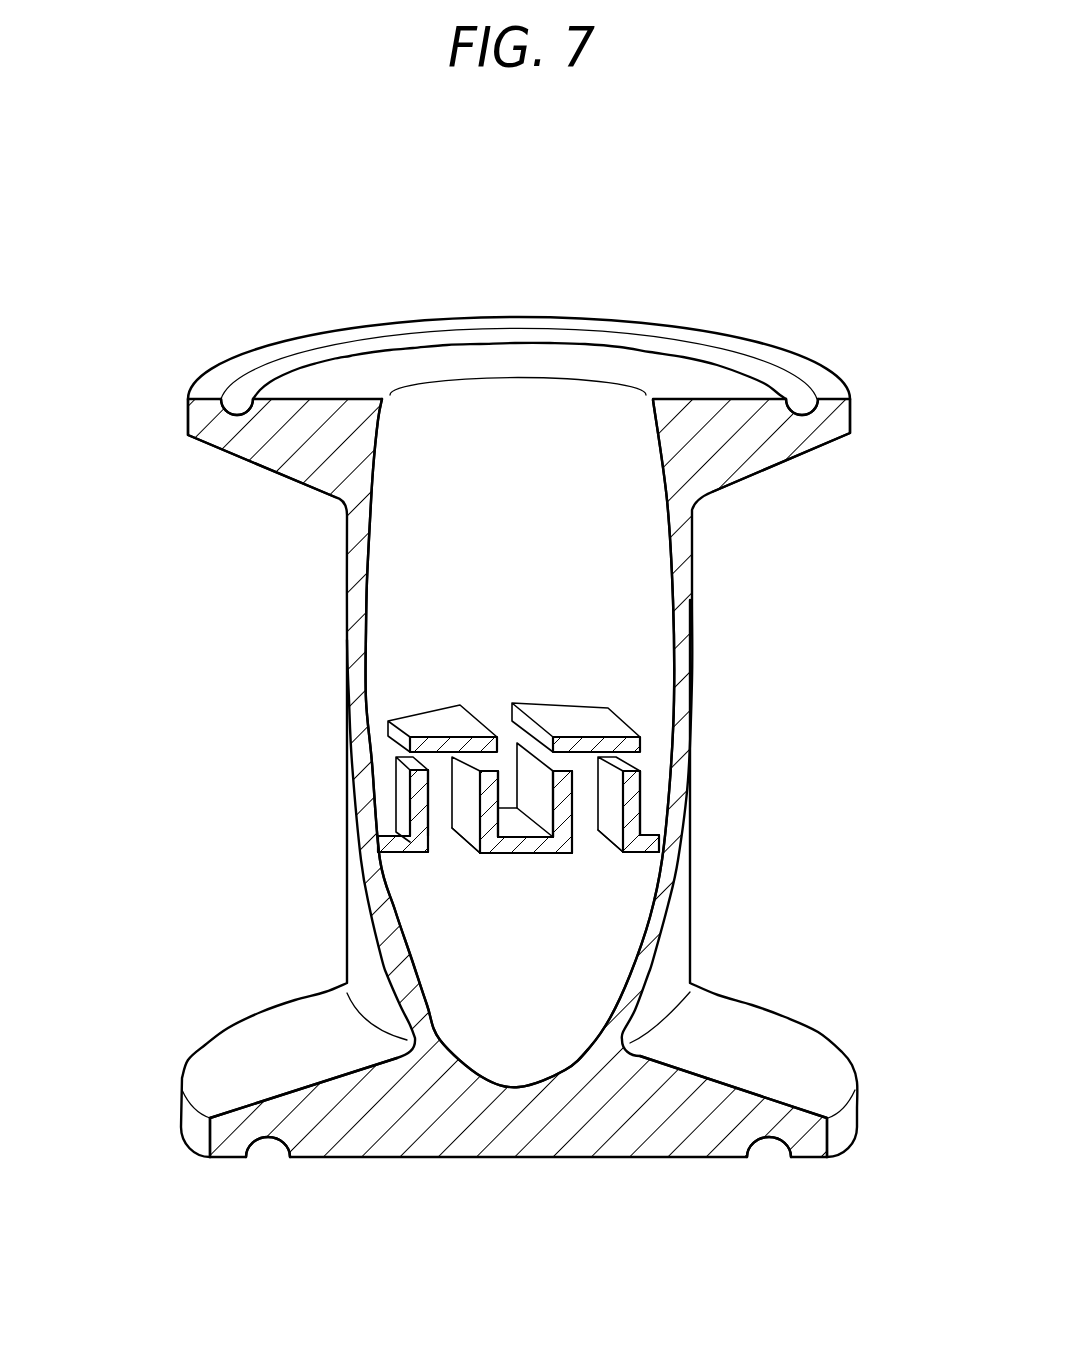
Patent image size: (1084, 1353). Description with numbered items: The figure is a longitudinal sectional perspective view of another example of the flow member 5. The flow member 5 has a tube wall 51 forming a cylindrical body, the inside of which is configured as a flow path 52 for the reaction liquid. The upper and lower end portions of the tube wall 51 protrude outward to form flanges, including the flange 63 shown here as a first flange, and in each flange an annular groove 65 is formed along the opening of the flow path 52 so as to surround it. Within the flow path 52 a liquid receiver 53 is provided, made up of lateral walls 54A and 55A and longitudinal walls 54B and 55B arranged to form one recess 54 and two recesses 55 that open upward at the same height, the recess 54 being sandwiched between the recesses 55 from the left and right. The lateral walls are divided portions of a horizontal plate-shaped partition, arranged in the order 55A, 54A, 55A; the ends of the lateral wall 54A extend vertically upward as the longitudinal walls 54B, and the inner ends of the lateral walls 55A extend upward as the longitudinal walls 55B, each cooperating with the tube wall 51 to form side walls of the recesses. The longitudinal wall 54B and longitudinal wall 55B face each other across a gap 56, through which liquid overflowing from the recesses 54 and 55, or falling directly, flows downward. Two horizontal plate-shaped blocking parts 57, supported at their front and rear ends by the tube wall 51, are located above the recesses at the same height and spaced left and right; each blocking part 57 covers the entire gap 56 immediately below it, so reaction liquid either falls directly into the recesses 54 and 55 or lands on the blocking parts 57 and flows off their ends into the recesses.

The flow member 5 is at (178, 893).
The tube wall 51 is at (680, 695).
The flow path 52 is at (662, 570).
The liquid receiver 53 is at (491, 1013).
The recess 54 is at (491, 1013).
The lateral wall 54A is at (512, 783).
The longitudinal wall 54B is at (468, 823).
The recess 55 is at (524, 838).
The lateral wall 55A is at (438, 828).
The longitudinal wall 55B is at (409, 814).
The gap 56 is at (430, 862).
The blocking part 57 is at (420, 702).
The flange 63 is at (838, 442).
The annular groove 65 is at (730, 362).